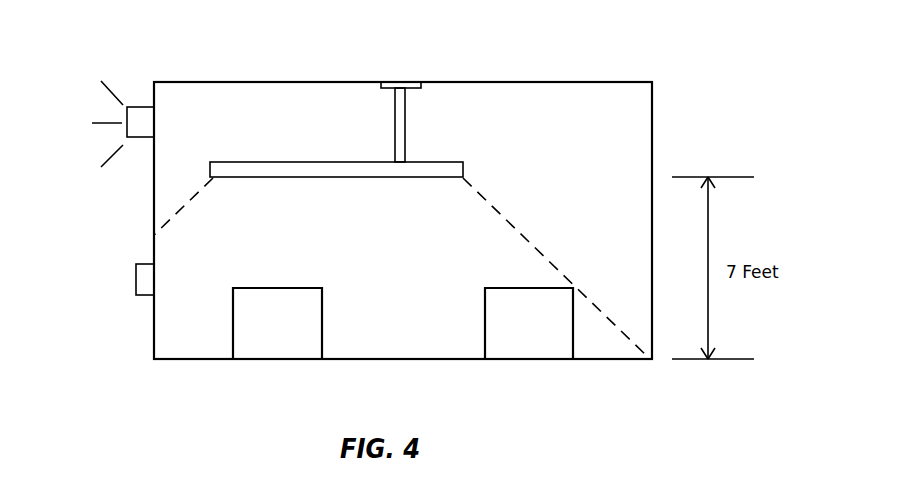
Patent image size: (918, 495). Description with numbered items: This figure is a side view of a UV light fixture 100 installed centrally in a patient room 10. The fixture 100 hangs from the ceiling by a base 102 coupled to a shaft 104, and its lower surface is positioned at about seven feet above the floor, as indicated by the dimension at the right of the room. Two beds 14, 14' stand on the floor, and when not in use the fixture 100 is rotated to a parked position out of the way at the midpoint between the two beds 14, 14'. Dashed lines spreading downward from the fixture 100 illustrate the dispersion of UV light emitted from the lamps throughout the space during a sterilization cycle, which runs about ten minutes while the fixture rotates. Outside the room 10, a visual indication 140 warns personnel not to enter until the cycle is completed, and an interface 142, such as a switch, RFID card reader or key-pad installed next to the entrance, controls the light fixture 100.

The patient room 10 is at (648, 132).
The bed 14 is at (277, 342).
The bed 14' is at (529, 346).
The UV light fixture 100 is at (311, 185).
The base 102 is at (408, 87).
The shaft 104 is at (400, 132).
The visual indication 140 is at (146, 113).
The interface 142 is at (140, 282).